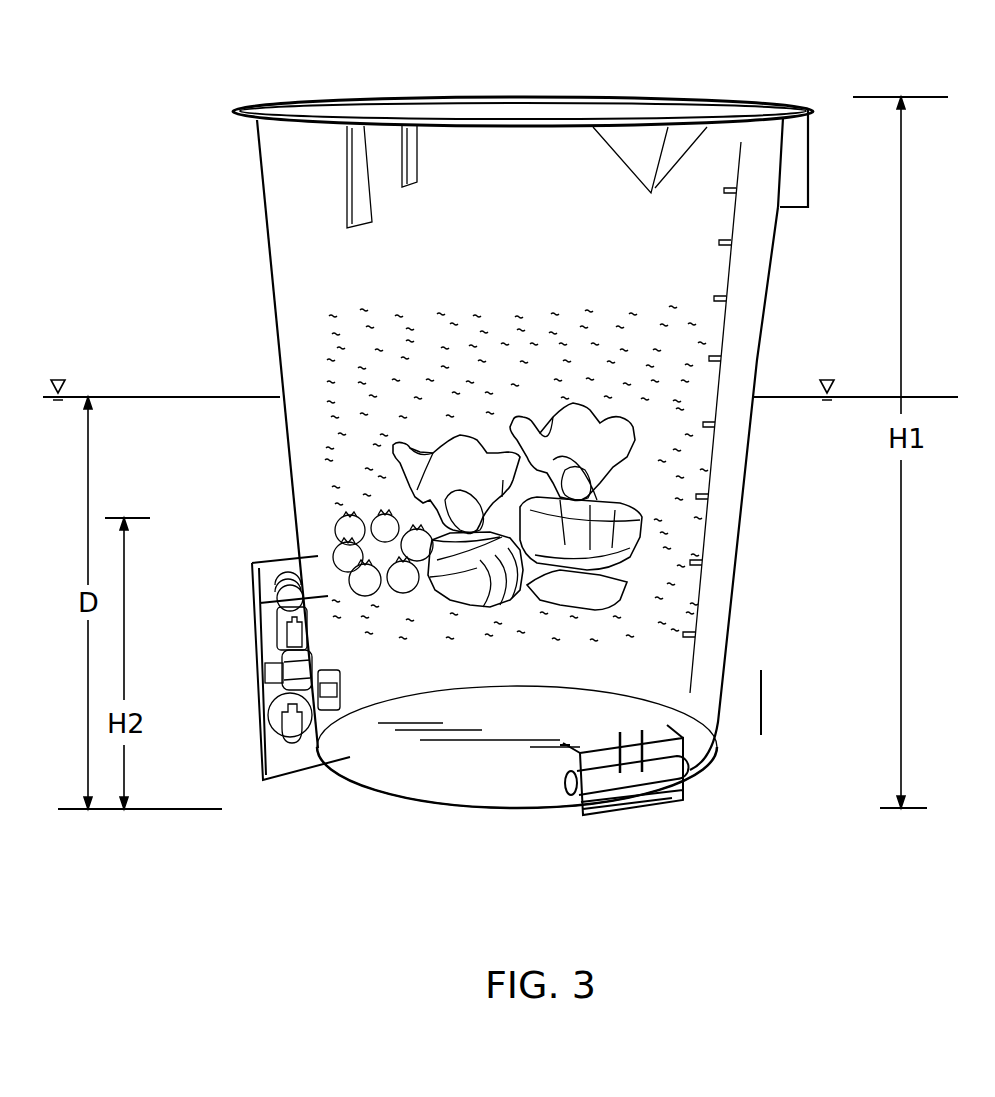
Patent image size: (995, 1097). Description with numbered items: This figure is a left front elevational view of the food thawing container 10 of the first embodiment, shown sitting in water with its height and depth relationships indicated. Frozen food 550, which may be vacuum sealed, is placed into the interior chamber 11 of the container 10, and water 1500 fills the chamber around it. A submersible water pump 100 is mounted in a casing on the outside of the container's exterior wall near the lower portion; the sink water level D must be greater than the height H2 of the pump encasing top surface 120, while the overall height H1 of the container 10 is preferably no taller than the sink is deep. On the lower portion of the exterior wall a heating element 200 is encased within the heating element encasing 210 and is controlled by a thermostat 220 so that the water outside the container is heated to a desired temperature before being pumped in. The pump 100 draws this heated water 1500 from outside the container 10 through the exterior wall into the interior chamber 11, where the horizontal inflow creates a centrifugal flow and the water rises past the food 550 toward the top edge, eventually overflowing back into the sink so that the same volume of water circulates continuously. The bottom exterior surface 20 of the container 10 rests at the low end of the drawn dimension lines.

The food thawing container 10 is at (441, 75).
The interior chamber 11 is at (552, 224).
The bottom exterior surface 20 is at (511, 812).
The submersible water pump 100 is at (243, 605).
The pump encasing top surface 120 is at (267, 553).
The heating element 200 is at (567, 818).
The heating element encasing 210 is at (628, 818).
The thermostat 220 is at (620, 735).
The frozen food 550 is at (432, 411).
The water 1500 is at (585, 343).